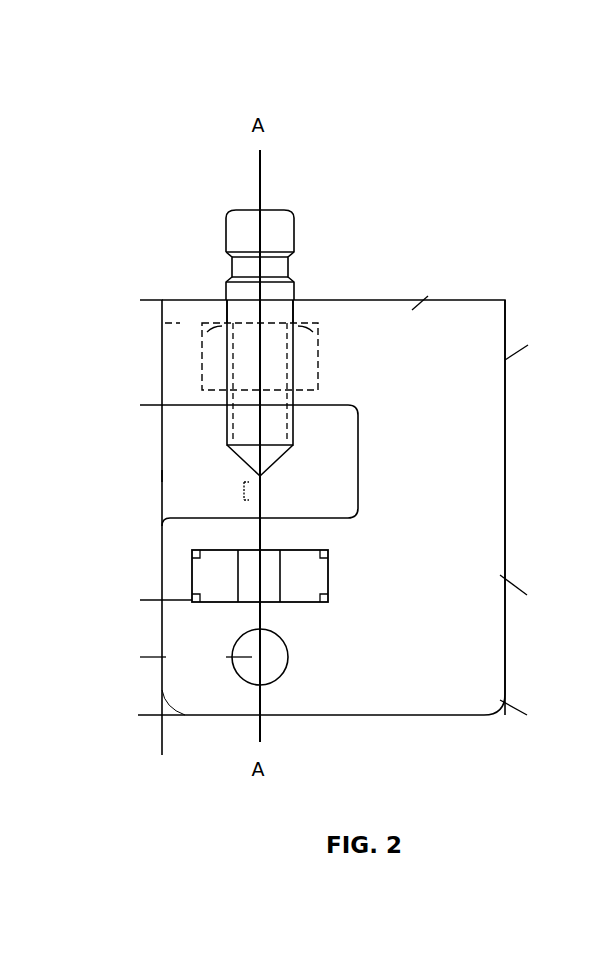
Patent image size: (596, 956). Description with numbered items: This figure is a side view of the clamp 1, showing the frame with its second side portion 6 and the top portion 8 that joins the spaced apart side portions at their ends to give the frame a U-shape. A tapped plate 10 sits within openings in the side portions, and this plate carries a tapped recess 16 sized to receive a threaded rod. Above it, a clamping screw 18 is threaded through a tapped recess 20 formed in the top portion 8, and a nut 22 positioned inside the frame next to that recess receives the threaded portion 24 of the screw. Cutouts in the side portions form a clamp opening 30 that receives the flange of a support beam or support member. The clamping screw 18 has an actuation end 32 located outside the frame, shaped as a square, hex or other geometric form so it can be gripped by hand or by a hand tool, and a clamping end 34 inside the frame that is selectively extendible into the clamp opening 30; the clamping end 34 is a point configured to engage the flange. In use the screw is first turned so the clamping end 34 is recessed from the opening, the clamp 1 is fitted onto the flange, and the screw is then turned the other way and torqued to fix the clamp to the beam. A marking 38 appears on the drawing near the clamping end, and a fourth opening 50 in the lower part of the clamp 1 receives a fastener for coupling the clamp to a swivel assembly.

The clamp 1 is at (127, 125).
The second side portion 6 is at (462, 455).
The top portion 8 is at (357, 297).
The tapped plate 10 is at (250, 602).
The tapped recess 16 is at (248, 575).
The clamping screw 18 is at (220, 280).
The tapped recess 20 is at (230, 310).
The nut 22 is at (210, 355).
The threaded portion 24 is at (228, 367).
The clamp opening 30 is at (160, 476).
The actuation end 32 is at (240, 222).
The clamping end 34 is at (270, 456).
The marking 38 is at (262, 492).
The fourth opening 50 is at (272, 688).